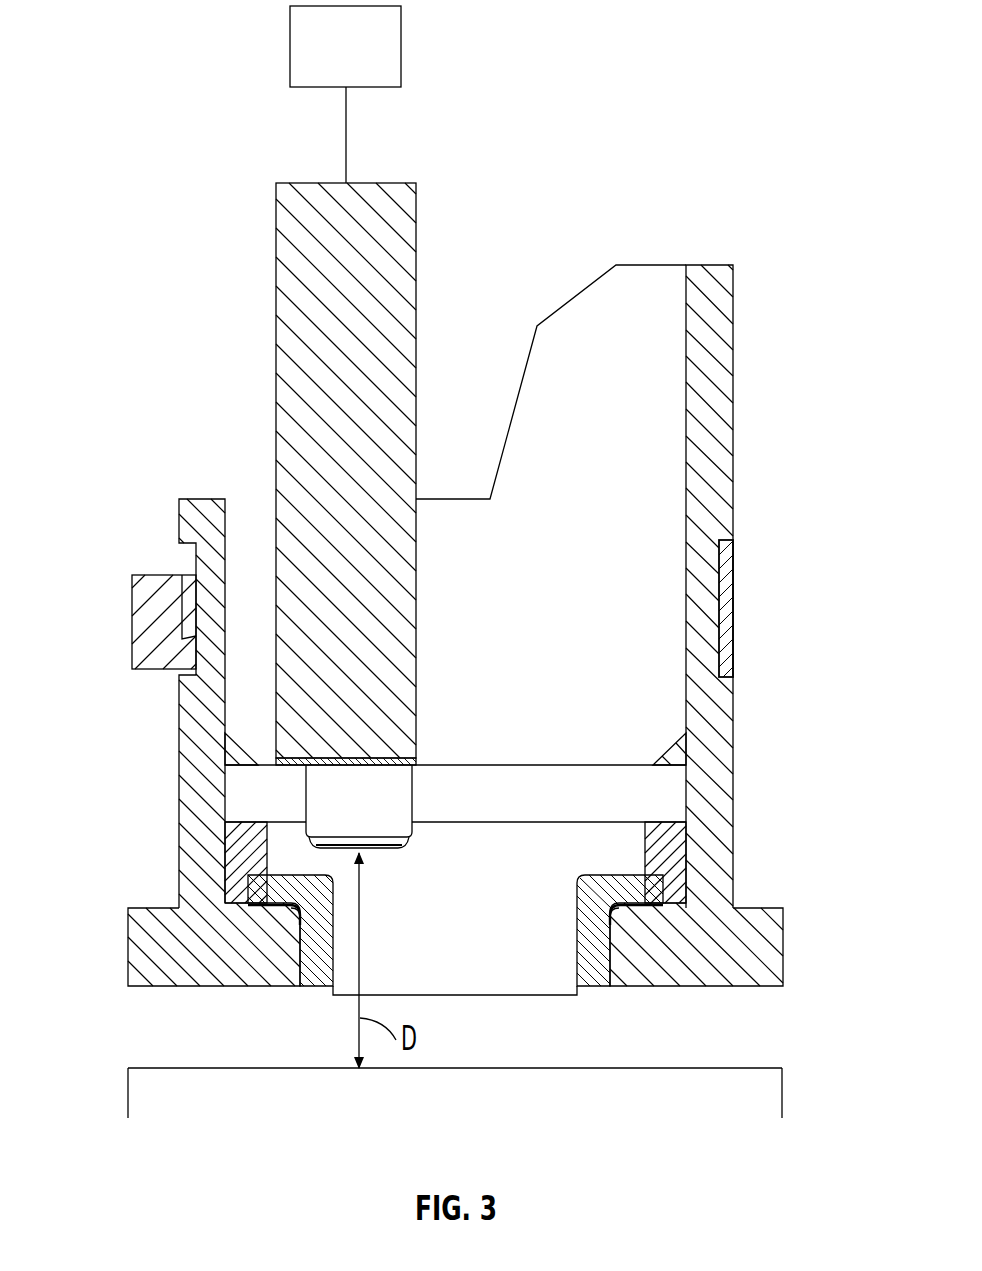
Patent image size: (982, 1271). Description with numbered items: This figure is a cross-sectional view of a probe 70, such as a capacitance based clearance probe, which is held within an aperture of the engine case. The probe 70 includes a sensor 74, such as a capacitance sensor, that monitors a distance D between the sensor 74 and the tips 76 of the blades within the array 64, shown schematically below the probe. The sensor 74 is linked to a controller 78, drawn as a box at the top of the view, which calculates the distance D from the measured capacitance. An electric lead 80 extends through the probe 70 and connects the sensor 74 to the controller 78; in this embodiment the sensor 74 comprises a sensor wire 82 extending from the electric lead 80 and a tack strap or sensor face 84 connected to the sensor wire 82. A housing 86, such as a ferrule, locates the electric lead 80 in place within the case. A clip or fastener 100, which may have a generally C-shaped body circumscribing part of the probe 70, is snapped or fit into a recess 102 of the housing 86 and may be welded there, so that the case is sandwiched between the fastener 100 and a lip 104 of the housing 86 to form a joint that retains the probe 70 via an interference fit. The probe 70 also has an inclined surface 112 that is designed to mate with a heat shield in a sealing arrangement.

The probe 70 is at (205, 50).
The controller 78 is at (362, 60).
The electric lead 80 is at (276, 353).
The inclined surface 112 is at (520, 381).
The housing 86 is at (720, 398).
The recess 102 is at (195, 560).
The fastener 100 is at (148, 618).
The sensor wire 82 is at (362, 833).
The sensor face 84 is at (383, 842).
The sensor 74 is at (286, 852).
The lip 104 is at (150, 955).
The tips 76 is at (719, 1062).
The array 64 is at (437, 1117).